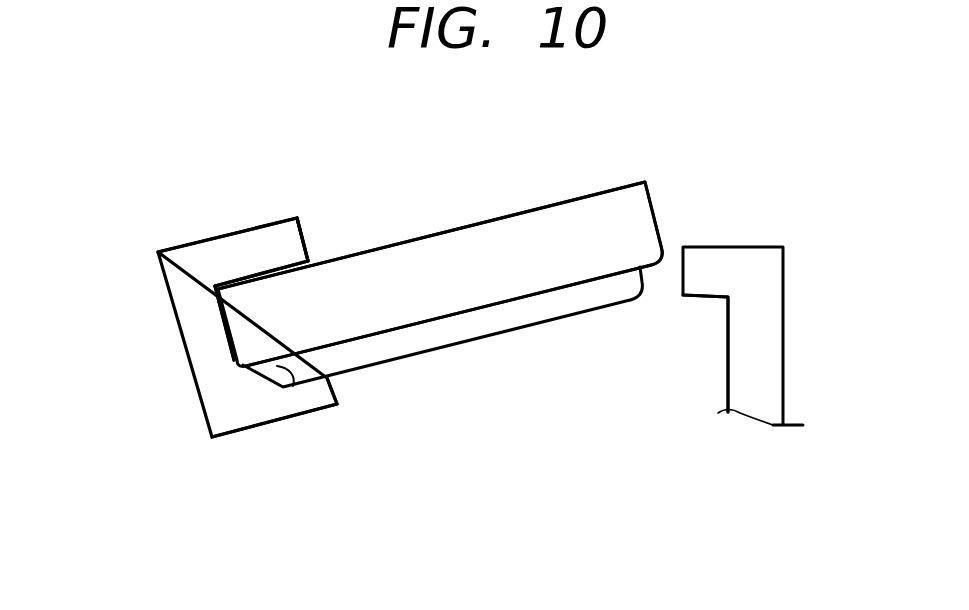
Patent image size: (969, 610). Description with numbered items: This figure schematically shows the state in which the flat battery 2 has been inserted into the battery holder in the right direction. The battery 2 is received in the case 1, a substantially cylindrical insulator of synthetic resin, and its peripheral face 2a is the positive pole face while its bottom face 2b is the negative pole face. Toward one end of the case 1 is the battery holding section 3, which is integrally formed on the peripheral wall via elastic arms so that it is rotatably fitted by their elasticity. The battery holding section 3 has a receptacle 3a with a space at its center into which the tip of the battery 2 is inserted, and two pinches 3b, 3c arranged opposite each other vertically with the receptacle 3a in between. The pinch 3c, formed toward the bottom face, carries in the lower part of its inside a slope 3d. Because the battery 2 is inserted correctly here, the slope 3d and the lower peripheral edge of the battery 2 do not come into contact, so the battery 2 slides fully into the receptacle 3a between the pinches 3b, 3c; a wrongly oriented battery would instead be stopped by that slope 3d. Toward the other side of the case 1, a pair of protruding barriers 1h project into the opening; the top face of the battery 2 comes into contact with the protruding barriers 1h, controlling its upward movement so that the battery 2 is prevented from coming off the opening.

The case 1 is at (783, 348).
The protruding barriers 1h is at (703, 275).
The flat battery 2 is at (520, 213).
The peripheral face of the battery 2a is at (633, 223).
The bottom face of the battery 2b is at (585, 312).
The battery holding section 3 is at (170, 295).
The receptacle 3a is at (310, 258).
The pinch 3b is at (270, 245).
The pinch 3c is at (318, 392).
The slope 3d is at (262, 372).